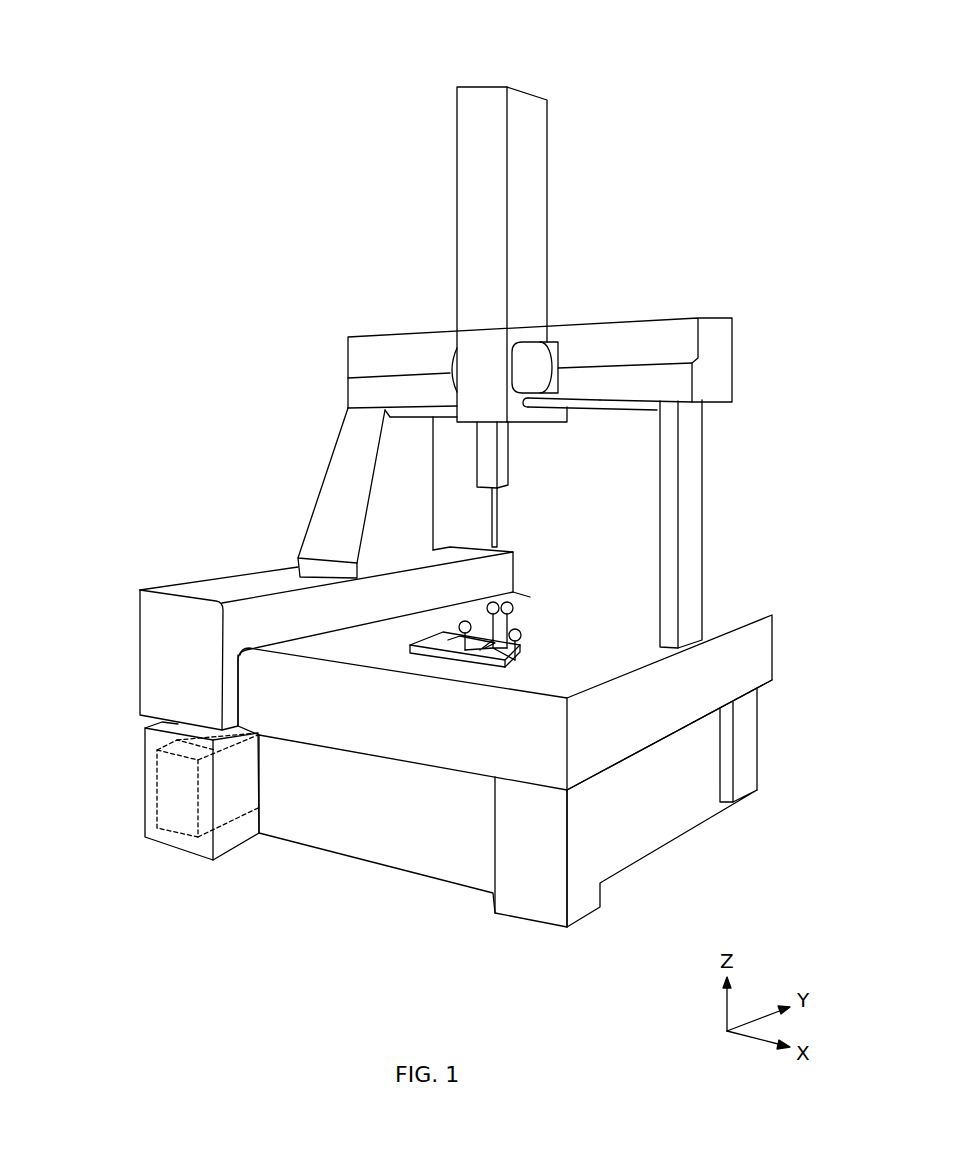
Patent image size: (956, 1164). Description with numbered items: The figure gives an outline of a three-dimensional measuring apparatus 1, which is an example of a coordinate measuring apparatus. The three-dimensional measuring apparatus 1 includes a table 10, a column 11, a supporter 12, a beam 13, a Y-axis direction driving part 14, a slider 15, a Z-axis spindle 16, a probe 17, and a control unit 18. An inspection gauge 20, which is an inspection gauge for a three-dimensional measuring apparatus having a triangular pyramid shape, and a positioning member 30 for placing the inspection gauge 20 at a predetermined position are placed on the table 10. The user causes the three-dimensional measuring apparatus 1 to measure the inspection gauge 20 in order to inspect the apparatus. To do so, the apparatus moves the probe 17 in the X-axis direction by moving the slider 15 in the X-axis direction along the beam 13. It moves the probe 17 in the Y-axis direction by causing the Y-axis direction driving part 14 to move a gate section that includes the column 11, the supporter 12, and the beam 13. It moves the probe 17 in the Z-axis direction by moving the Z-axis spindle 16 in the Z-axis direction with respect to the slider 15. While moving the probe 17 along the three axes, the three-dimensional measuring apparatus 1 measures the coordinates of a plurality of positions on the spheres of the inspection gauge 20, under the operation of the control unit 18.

The three-dimensional measuring apparatus 1 is at (496, 64).
The table 10 is at (395, 722).
The column 11 is at (350, 470).
The supporter 12 is at (700, 460).
The beam 13 is at (365, 355).
The Y-axis direction driving part 14 is at (170, 636).
The slider 15 is at (527, 178).
The Z-axis spindle 16 is at (510, 478).
The probe 17 is at (500, 520).
The control unit 18 is at (157, 790).
The inspection gauge 20 is at (520, 644).
The positioning member 30 is at (415, 648).